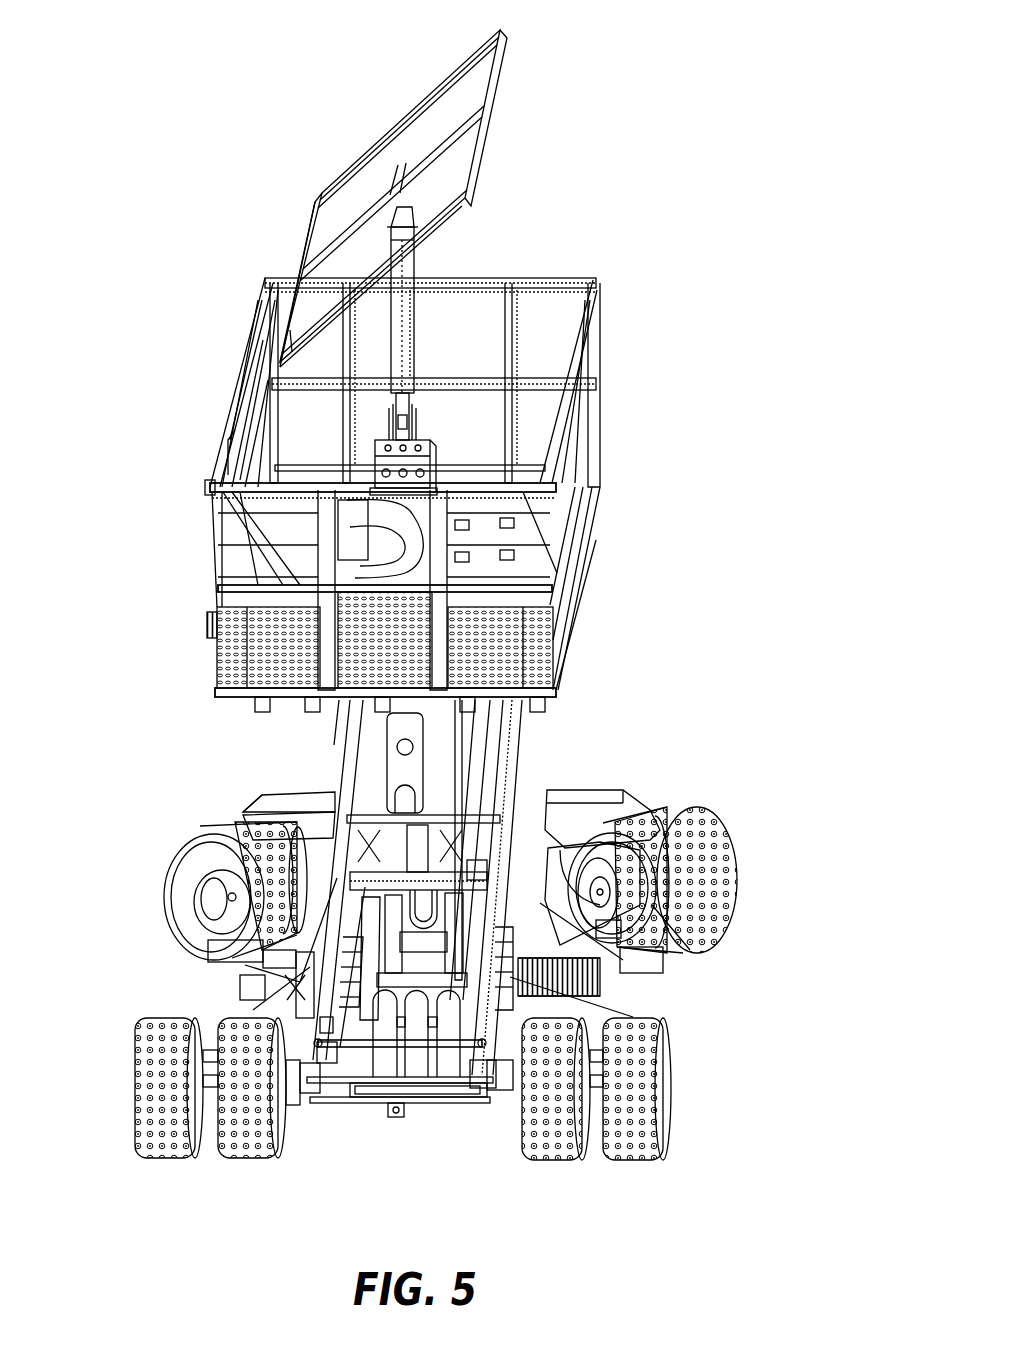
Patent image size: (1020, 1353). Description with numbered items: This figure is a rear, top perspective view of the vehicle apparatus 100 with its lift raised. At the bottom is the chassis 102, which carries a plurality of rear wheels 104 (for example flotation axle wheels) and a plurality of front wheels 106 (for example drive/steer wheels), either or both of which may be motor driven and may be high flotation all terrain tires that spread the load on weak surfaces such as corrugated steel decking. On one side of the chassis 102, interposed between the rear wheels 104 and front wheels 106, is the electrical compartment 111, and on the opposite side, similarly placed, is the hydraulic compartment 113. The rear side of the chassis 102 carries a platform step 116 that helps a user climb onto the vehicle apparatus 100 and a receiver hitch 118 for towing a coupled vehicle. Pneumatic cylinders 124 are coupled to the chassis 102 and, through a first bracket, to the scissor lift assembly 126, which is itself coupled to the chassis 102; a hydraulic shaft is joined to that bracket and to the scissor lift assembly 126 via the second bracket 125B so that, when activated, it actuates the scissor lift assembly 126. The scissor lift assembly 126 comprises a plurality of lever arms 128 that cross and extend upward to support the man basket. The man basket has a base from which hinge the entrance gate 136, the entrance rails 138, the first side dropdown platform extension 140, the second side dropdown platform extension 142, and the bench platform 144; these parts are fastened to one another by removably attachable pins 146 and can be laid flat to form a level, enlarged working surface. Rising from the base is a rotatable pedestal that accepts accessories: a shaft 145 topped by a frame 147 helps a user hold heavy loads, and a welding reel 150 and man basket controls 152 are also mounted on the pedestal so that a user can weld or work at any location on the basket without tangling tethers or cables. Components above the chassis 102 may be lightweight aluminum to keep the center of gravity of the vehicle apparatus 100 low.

The vehicle apparatus 100 is at (128, 60).
The chassis 102 is at (665, 952).
The rear wheels 104 is at (670, 1100).
The front wheels 106 is at (722, 850).
The electrical compartment 111 is at (620, 984).
The hydraulic compartment 113 is at (220, 964).
The platform step 116 is at (366, 1094).
The receiver hitch 118 is at (396, 1118).
The pneumatic cylinders 124 is at (442, 1027).
The second bracket 125B is at (392, 772).
The scissor lift assembly 126 is at (520, 726).
The lever arms 128 is at (520, 785).
The entrance gate 136 is at (257, 662).
The entrance rails 138 is at (215, 498).
The first side dropdown platform extension 140 is at (570, 407).
The second side dropdown platform extension 142 is at (262, 380).
The bench platform 144 is at (545, 278).
The shaft 145 is at (408, 300).
The removably attachable pins 146 is at (590, 278).
The frame 147 is at (490, 90).
The welding reel 150 is at (355, 539).
The man basket controls 152 is at (430, 445).